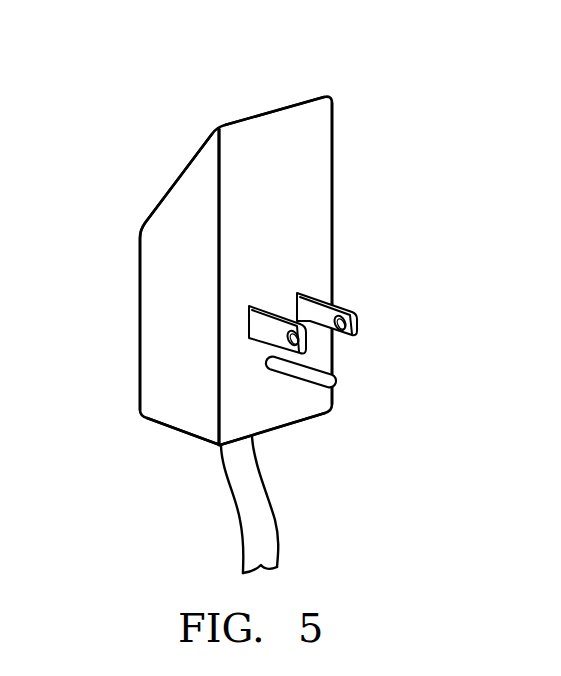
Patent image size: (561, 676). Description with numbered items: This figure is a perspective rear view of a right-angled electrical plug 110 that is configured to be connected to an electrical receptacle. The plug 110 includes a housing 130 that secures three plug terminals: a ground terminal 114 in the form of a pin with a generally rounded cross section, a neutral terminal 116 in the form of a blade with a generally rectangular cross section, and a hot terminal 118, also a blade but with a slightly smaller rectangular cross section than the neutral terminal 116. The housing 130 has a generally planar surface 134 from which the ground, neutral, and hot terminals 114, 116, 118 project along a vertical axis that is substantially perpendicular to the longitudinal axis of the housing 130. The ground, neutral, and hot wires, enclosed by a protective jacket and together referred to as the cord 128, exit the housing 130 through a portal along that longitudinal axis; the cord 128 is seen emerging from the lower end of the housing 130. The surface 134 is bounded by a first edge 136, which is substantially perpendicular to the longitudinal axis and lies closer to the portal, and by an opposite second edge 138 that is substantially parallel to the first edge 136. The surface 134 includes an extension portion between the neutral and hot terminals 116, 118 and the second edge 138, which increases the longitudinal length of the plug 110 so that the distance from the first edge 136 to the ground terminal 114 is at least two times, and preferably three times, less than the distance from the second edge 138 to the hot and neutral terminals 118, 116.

The right-angled electrical plug 110 is at (187, 118).
The ground terminal 114 is at (336, 376).
The neutral terminal 116 is at (340, 309).
The hot terminal 118 is at (283, 322).
The cord 128 is at (260, 512).
The housing 130 is at (153, 249).
The planar surface 134 is at (313, 155).
The first edge 136 is at (303, 423).
The second edge 138 is at (278, 110).